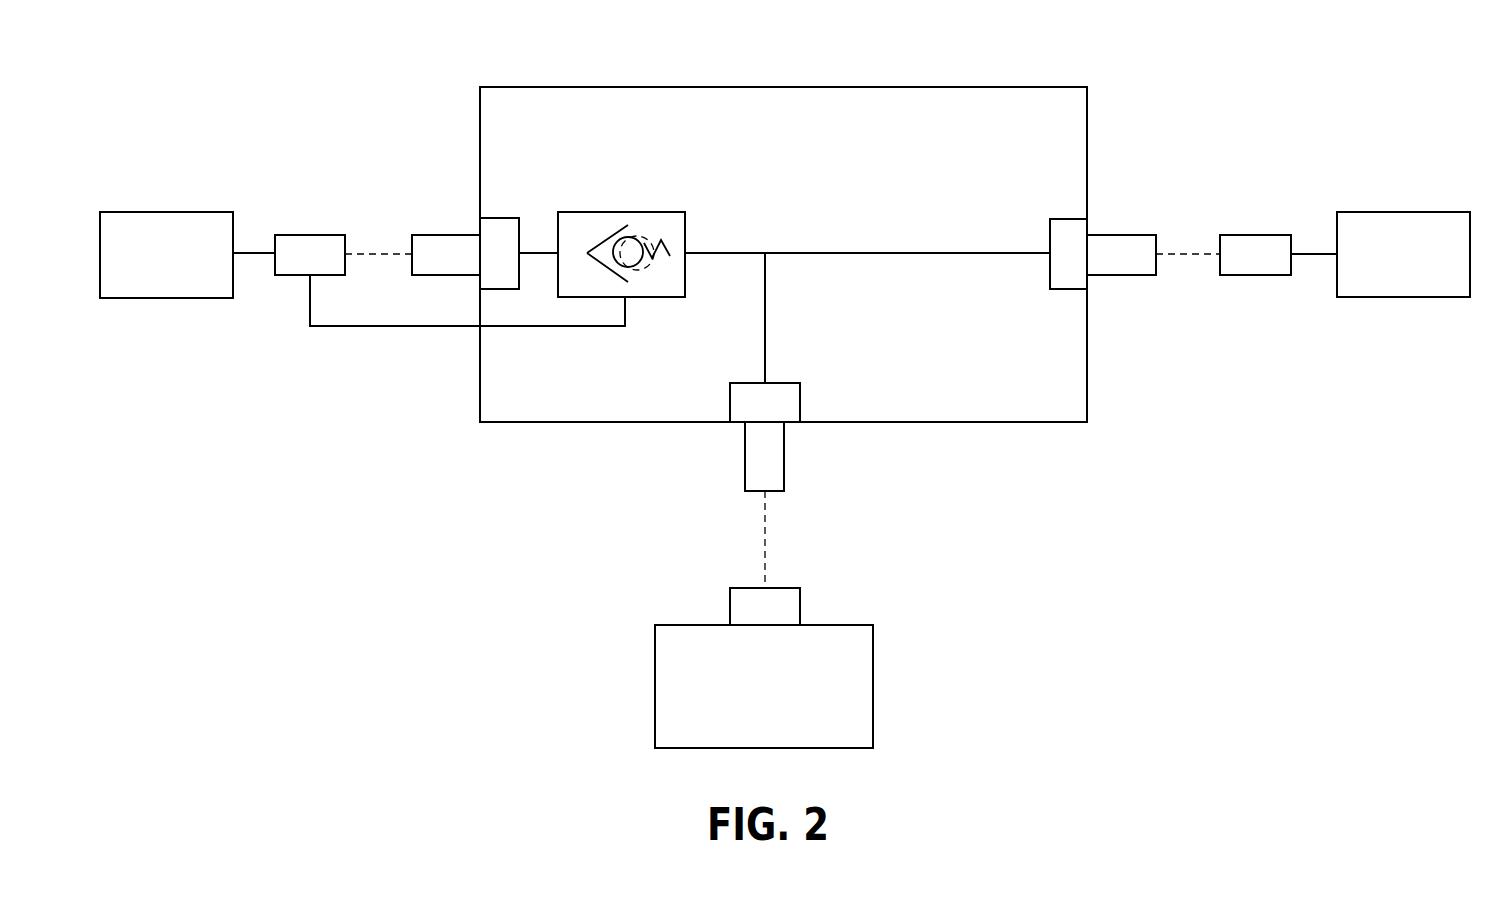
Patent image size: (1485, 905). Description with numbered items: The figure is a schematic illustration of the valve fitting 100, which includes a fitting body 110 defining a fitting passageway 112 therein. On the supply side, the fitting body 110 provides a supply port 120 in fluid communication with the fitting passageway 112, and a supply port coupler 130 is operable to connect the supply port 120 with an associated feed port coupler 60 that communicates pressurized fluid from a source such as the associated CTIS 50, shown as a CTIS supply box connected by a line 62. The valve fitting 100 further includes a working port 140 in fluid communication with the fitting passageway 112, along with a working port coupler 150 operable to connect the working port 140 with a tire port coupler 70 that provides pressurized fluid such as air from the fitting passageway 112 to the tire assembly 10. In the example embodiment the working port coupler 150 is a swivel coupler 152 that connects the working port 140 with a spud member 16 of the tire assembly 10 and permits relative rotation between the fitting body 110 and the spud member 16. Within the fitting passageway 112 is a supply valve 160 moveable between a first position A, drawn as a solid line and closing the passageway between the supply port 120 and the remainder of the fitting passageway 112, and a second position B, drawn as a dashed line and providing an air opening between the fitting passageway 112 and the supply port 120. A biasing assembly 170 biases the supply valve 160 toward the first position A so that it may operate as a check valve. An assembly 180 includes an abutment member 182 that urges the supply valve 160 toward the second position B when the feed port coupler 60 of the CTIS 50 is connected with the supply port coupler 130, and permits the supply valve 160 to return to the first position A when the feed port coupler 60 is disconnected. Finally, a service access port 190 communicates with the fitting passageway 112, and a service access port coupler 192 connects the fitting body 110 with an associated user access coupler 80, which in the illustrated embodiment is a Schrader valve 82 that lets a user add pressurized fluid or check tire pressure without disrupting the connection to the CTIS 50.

The tire assembly 10 is at (650, 685).
The spud member 16 is at (730, 608).
The CTIS 50 is at (170, 210).
The feed port coupler 60 is at (307, 230).
The supply line 62 is at (254, 262).
The tire port coupler 70 is at (769, 587).
The user access coupler 80 is at (1258, 280).
The Schrader valve 82 is at (1260, 235).
The valve fitting 100 is at (730, 276).
The fitting body 110 is at (985, 125).
The fitting passageway 112 is at (800, 250).
The supply port 120 is at (472, 217).
The supply port coupler 130 is at (427, 232).
The working port 140 is at (783, 380).
The working port coupler 150 is at (760, 463).
The swivel coupler 152 is at (786, 455).
The supply valve 160 is at (634, 239).
The biasing assembly 170 is at (668, 260).
The assembly 180 is at (457, 340).
The abutment member 182 is at (327, 328).
The service access port 190 is at (1062, 218).
The service access port coupler 192 is at (1136, 232).
The first position A is at (600, 250).
The second position B is at (640, 238).